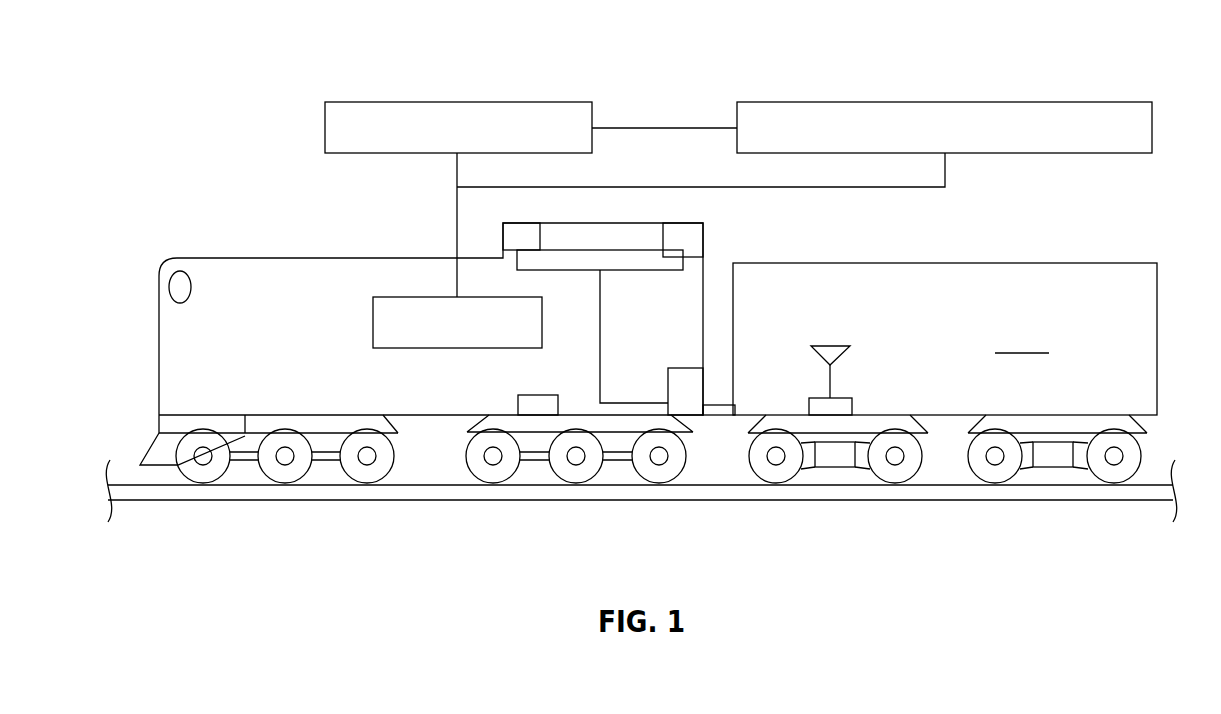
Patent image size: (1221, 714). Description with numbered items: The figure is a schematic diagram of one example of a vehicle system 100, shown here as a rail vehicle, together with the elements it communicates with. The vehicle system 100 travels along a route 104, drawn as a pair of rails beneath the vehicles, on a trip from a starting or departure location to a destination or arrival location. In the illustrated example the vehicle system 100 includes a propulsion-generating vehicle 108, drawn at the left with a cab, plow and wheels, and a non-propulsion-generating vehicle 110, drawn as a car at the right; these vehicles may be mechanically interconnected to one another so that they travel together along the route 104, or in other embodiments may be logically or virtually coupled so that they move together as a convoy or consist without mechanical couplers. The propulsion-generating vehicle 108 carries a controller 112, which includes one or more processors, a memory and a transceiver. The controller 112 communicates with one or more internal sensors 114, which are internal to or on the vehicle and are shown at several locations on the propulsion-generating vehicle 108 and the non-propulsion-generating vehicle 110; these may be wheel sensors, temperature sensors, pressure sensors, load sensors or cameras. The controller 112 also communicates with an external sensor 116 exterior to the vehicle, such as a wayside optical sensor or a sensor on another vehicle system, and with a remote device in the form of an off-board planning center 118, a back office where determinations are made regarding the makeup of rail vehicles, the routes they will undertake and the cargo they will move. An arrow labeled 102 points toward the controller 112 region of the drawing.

The vehicle system 100 is at (362, 203).
The control system 102 is at (396, 313).
The route 104 is at (158, 526).
The propulsion-generating vehicle 108 is at (228, 258).
The non-propulsion-generating vehicle 110 is at (945, 373).
The controller 112 is at (373, 322).
The internal sensors 114 is at (538, 395).
The external sensor 116 is at (458, 102).
The off-board planning center 118 is at (945, 102).